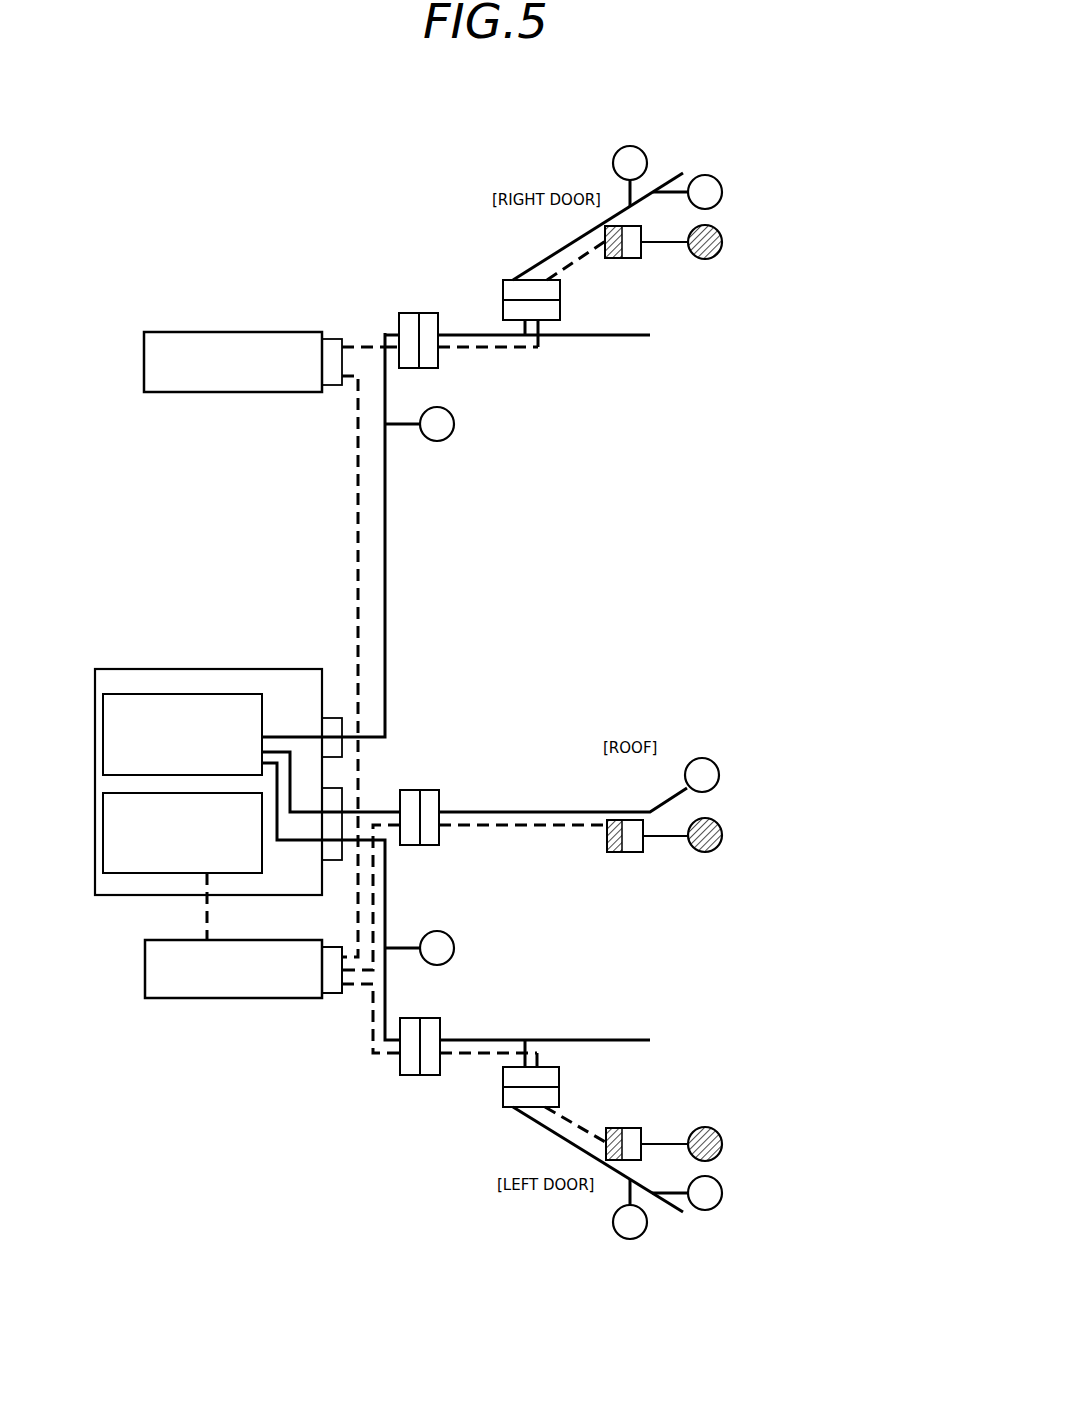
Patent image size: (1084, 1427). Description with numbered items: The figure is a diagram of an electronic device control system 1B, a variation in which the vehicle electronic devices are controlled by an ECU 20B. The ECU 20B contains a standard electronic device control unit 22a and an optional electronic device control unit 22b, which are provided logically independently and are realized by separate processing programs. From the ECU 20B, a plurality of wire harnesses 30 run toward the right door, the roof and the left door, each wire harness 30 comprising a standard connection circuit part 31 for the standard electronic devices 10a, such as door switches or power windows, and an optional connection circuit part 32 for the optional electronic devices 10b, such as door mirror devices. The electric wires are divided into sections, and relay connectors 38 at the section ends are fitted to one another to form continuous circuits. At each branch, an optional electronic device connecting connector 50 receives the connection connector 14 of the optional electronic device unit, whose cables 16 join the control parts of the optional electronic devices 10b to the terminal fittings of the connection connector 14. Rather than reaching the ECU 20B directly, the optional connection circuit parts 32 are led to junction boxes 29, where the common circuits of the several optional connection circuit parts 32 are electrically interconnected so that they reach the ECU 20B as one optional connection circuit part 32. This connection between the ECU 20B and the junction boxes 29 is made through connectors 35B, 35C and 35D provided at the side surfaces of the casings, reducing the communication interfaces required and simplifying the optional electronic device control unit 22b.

The electronic device control system 1B is at (282, 200).
The standard electronic device 10a is at (636, 147).
The optional electronic device 10b is at (722, 228).
The connection connector 14 is at (633, 258).
The cable 16 is at (670, 243).
The ECU 20B is at (258, 669).
The standard electronic device control unit 22a is at (222, 694).
The optional electronic device control unit 22b is at (230, 873).
The junction box 29 is at (255, 332).
The wire harness 30 is at (398, 692).
The standard connection circuit part 31 is at (385, 563).
The optional connection circuit part 32 is at (357, 560).
The connector 35B is at (335, 718).
The connector 35C is at (342, 792).
The connector 35D is at (332, 993).
The relay connector 38 is at (409, 313).
The optional electronic device connecting connector 50 is at (615, 258).